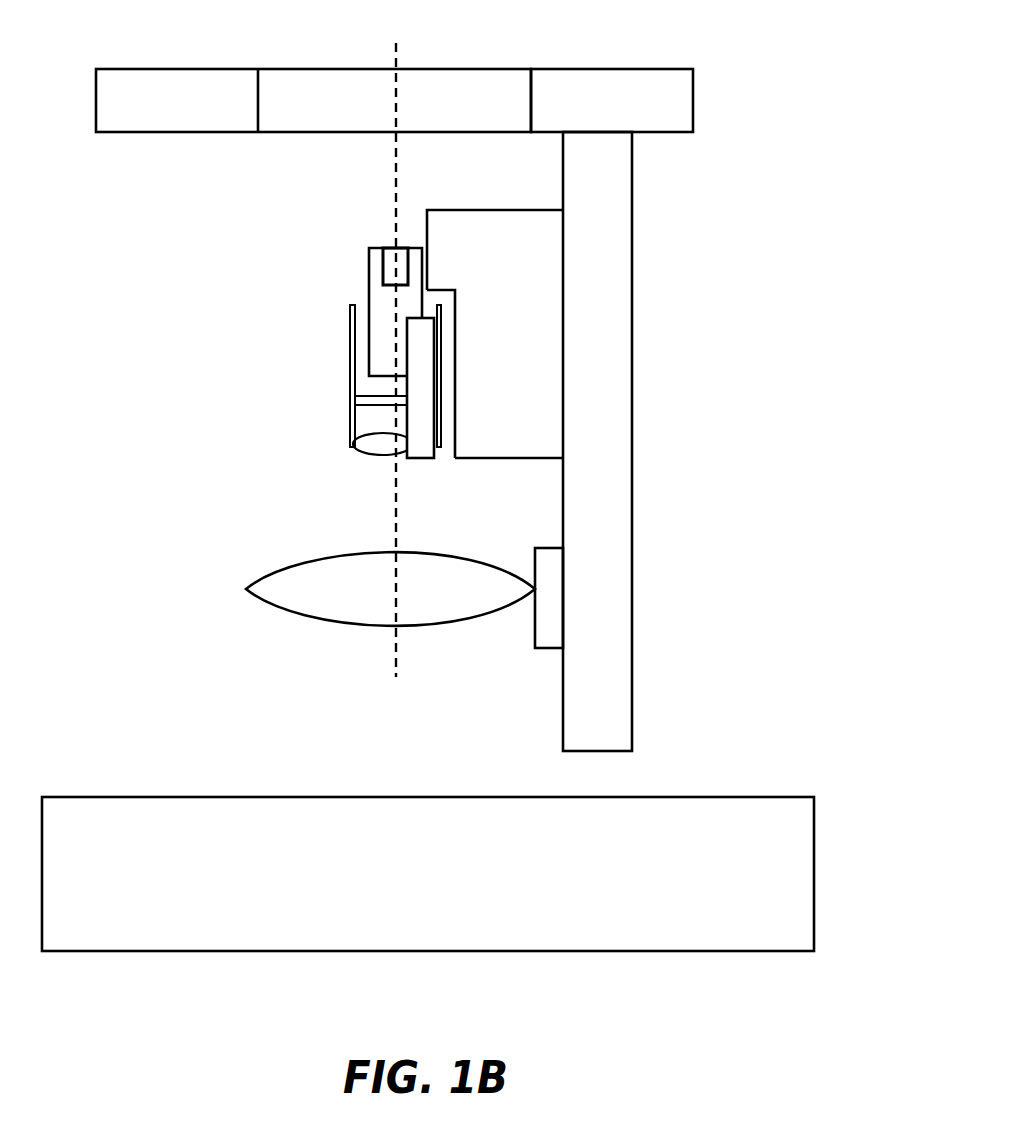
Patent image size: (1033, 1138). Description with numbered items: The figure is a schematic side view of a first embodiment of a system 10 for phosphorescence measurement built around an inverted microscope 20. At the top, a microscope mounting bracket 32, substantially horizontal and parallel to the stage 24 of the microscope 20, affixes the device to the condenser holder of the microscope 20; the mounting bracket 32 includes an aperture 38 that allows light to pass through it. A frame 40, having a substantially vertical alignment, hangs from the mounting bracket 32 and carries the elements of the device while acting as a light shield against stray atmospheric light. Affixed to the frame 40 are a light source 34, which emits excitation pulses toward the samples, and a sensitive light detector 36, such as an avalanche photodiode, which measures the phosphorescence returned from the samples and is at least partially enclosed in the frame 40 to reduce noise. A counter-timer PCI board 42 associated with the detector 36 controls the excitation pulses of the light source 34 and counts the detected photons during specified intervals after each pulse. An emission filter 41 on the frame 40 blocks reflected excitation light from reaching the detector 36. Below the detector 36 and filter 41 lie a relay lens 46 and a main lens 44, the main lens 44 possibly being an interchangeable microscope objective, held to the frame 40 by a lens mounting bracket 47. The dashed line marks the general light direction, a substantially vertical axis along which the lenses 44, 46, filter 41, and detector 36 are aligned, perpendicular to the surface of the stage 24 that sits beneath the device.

The system 10 is at (121, 24).
The inverted microscope 20 is at (727, 1002).
The stage 24 is at (434, 904).
The microscope mounting bracket 32 is at (601, 91).
The light source 34 is at (428, 448).
The sensitive light detector 36 is at (369, 265).
The aperture 38 is at (461, 101).
The frame 40 is at (617, 270).
The emission filter 41 is at (367, 400).
The counter-timer PCI board 42 is at (385, 283).
The main lens 44 is at (270, 590).
The relay lens 46 is at (372, 447).
The lens mounting bracket 47 is at (548, 642).